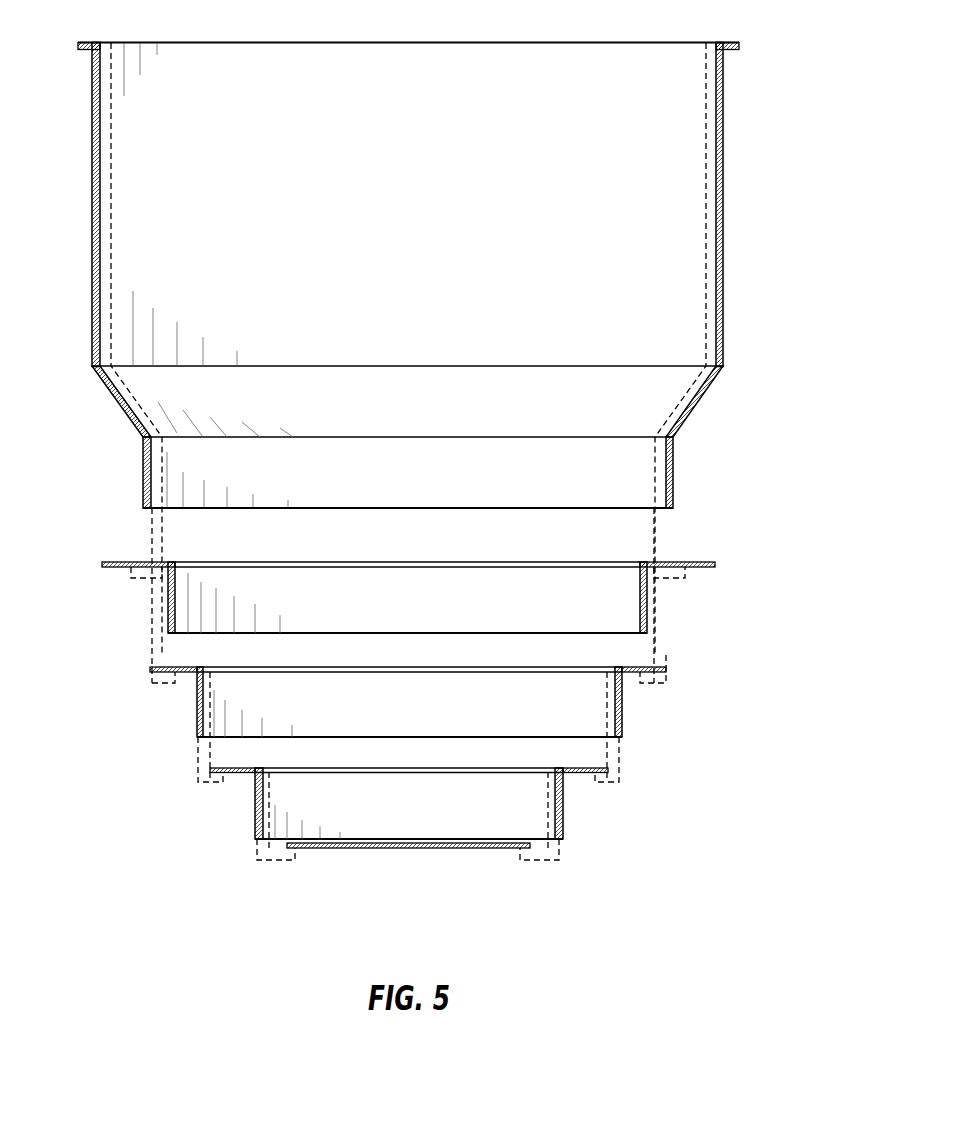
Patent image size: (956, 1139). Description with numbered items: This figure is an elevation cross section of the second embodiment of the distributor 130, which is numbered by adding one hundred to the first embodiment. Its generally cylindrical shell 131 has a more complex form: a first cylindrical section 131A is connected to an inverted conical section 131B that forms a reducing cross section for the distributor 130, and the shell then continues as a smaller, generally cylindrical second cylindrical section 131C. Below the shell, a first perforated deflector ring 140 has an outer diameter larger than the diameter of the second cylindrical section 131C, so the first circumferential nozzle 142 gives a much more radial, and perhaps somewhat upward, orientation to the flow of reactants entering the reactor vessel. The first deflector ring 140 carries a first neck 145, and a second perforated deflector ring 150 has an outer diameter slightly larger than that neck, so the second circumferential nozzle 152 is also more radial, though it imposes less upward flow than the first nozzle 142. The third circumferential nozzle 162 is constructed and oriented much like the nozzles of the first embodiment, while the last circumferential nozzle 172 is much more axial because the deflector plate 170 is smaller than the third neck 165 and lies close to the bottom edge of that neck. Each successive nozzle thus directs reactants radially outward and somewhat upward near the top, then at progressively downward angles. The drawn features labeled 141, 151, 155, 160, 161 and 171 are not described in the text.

The distributor 130 is at (416, 363).
The generally cylindrical shell 131 is at (416, 363).
The first cylindrical section 131A is at (723, 345).
The inverted conical section 131B is at (700, 402).
The second cylindrical section 131C is at (673, 491).
The first perforated deflector ring 140 is at (421, 585).
The first insert flange 141 is at (126, 562).
The first circumferential nozzle 142 is at (708, 547).
The first neck 145 is at (648, 606).
The second perforated deflector ring 150 is at (421, 707).
The second insert flange 151 is at (163, 666).
The second circumferential nozzle 152 is at (667, 643).
The second insert side wall 155 is at (622, 705).
The third insert 160 is at (426, 789).
The third insert flange 161 is at (221, 768).
The third circumferential nozzle 162 is at (620, 765).
The third neck 165 is at (564, 806).
The deflector plate 170 is at (448, 843).
The bottom plate top surface 171 is at (410, 840).
The last circumferential nozzle 172 is at (561, 846).